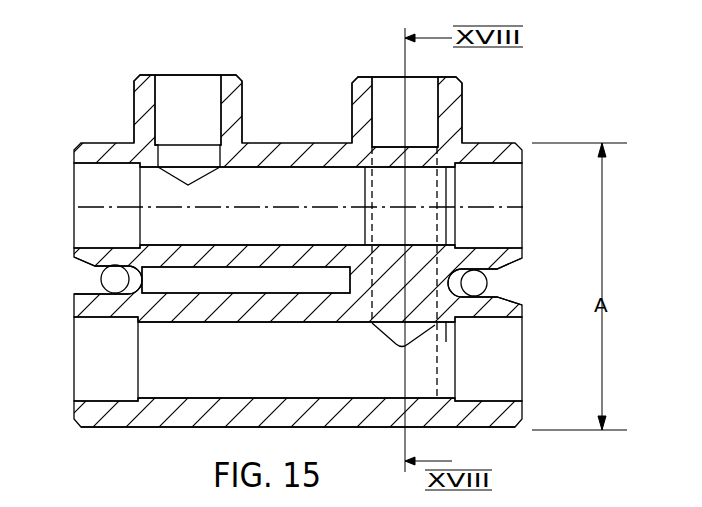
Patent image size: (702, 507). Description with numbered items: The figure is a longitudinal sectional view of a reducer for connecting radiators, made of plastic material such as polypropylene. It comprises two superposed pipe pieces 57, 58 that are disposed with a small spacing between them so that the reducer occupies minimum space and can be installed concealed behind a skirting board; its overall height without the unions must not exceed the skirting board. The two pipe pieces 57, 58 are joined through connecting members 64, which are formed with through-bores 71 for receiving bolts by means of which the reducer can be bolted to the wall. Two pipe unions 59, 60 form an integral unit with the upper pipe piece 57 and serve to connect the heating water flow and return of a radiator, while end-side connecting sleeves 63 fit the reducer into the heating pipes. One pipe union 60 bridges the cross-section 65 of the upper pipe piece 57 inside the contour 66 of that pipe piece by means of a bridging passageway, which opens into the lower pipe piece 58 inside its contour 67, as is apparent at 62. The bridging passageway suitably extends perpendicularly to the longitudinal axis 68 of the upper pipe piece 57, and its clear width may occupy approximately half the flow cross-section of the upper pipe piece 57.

The upper pipe piece 57 is at (292, 252).
The lower pipe piece 58 is at (494, 434).
The pipe union 59 is at (146, 84).
The pipe union 60 is at (453, 83).
The opening of bridging passageway into lower pipe piece 62 is at (394, 334).
The end-side connecting sleeves 63 is at (88, 218).
The connecting members 64 is at (92, 284).
The cross-section of upper pipe piece 65 is at (276, 184).
The contour of upper pipe piece 66 is at (100, 140).
The contour of lower pipe piece 67 is at (123, 427).
The longitudinal axis of pipe piece 68 is at (318, 200).
The through-bores 71 is at (108, 279).